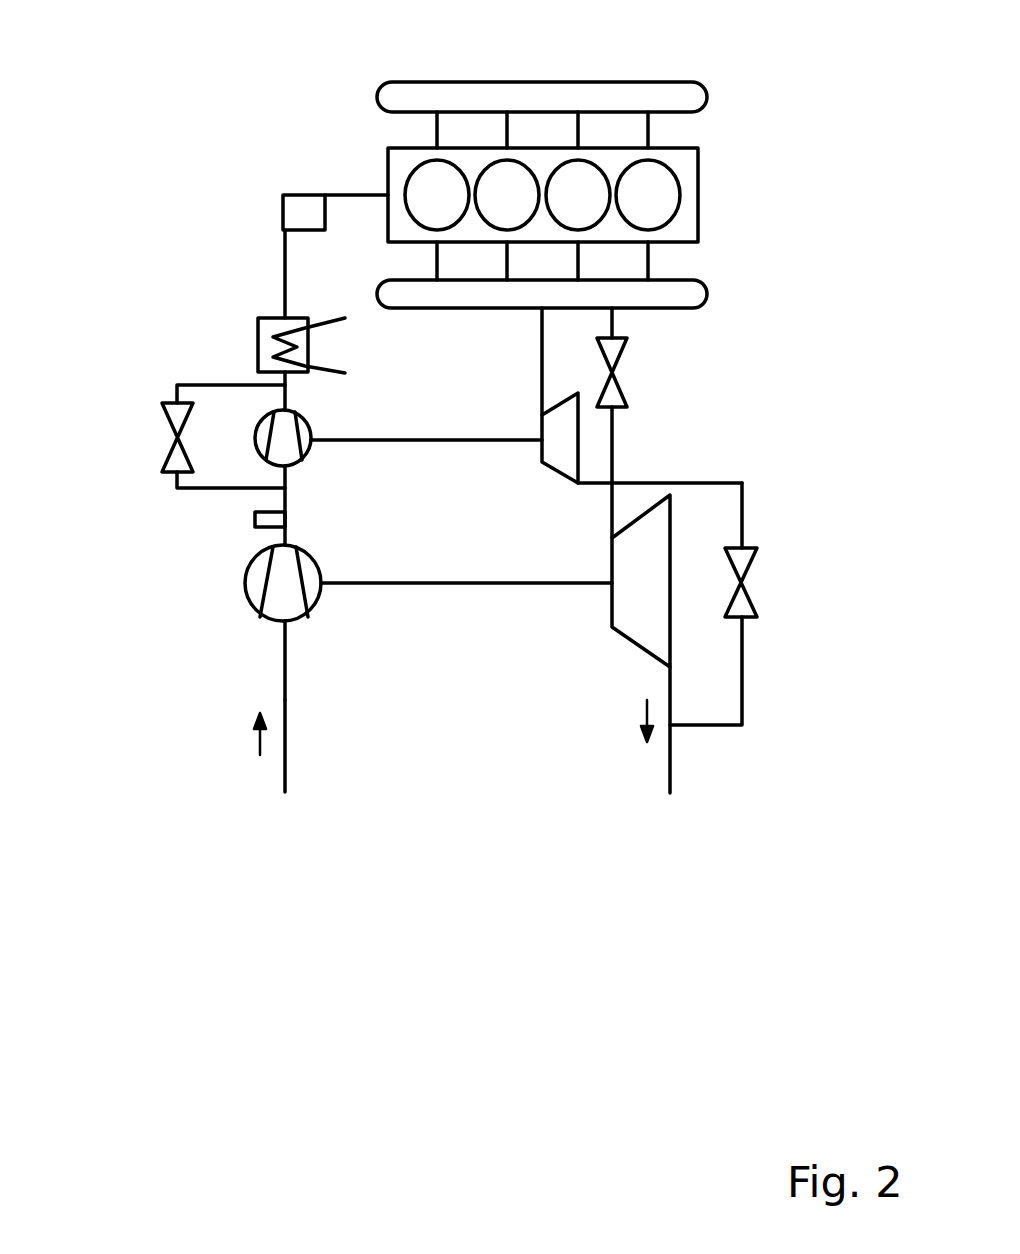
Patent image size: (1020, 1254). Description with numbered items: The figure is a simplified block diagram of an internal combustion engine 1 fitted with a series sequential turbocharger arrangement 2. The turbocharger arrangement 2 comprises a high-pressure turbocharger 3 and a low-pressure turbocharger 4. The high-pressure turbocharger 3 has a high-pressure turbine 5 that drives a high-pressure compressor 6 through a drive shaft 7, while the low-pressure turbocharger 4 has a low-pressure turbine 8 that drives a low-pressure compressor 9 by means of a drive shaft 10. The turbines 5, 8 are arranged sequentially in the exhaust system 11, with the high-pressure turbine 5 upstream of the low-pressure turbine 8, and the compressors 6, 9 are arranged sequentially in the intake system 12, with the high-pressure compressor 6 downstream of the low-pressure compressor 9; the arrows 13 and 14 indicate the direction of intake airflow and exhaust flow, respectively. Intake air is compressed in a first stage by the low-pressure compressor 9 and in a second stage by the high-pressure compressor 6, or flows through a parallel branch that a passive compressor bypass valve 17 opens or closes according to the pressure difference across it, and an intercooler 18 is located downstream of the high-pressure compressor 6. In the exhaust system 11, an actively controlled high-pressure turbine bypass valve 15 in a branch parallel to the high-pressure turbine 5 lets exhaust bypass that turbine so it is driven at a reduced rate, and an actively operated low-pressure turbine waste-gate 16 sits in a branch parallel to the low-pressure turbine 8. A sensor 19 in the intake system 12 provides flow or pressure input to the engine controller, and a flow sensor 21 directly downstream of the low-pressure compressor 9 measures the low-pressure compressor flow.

The internal combustion engine 1 is at (790, 80).
The turbocharger arrangement 2 is at (785, 424).
The high-pressure turbocharger 3 is at (164, 392).
The low-pressure turbocharger 4 is at (146, 561).
The high-pressure turbine 5 is at (547, 418).
The high-pressure compressor 6 is at (308, 423).
The drive shaft 7 is at (440, 440).
The low-pressure turbine 8 is at (626, 614).
The low-pressure compressor 9 is at (288, 610).
The drive shaft 10 is at (518, 583).
The exhaust system 11 is at (721, 807).
The intake system 12 is at (210, 841).
The arrow 13 is at (255, 740).
The arrow 14 is at (642, 717).
The high-pressure turbine bypass valve 15 is at (617, 355).
The low-pressure turbine waste-gate 16 is at (750, 613).
The compressor bypass valve 17 is at (177, 418).
The intercooler 18 is at (260, 322).
The sensor 19 is at (302, 207).
The flow sensor 21 is at (252, 518).